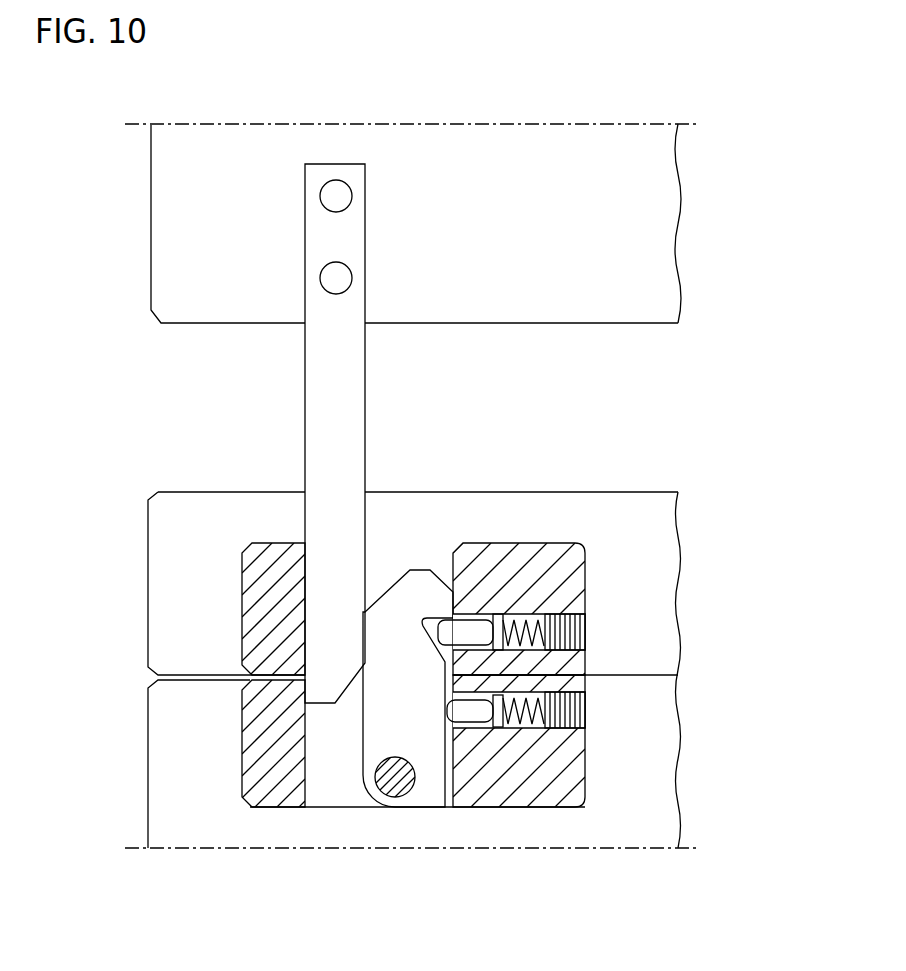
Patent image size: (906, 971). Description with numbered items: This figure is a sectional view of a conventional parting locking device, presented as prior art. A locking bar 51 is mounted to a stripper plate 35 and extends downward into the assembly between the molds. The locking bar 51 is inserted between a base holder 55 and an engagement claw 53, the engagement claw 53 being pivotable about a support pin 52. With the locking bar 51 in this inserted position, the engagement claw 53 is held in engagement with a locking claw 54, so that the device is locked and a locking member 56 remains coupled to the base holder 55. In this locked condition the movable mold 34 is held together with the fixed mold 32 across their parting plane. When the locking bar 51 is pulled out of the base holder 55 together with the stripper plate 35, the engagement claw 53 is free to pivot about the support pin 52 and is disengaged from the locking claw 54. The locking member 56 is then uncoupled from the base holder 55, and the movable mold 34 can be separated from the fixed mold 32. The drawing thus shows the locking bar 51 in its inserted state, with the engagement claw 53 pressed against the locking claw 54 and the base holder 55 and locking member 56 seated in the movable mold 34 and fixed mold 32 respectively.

The fixed mold 32 is at (638, 762).
The movable mold 34 is at (648, 580).
The stripper plate 35 is at (175, 220).
The locking bar 51 is at (327, 385).
The support pin 52 is at (403, 785).
The engagement claw 53 is at (412, 593).
The locking claw 54 is at (472, 627).
The base holder 55 is at (255, 577).
The locking member 56 is at (275, 807).